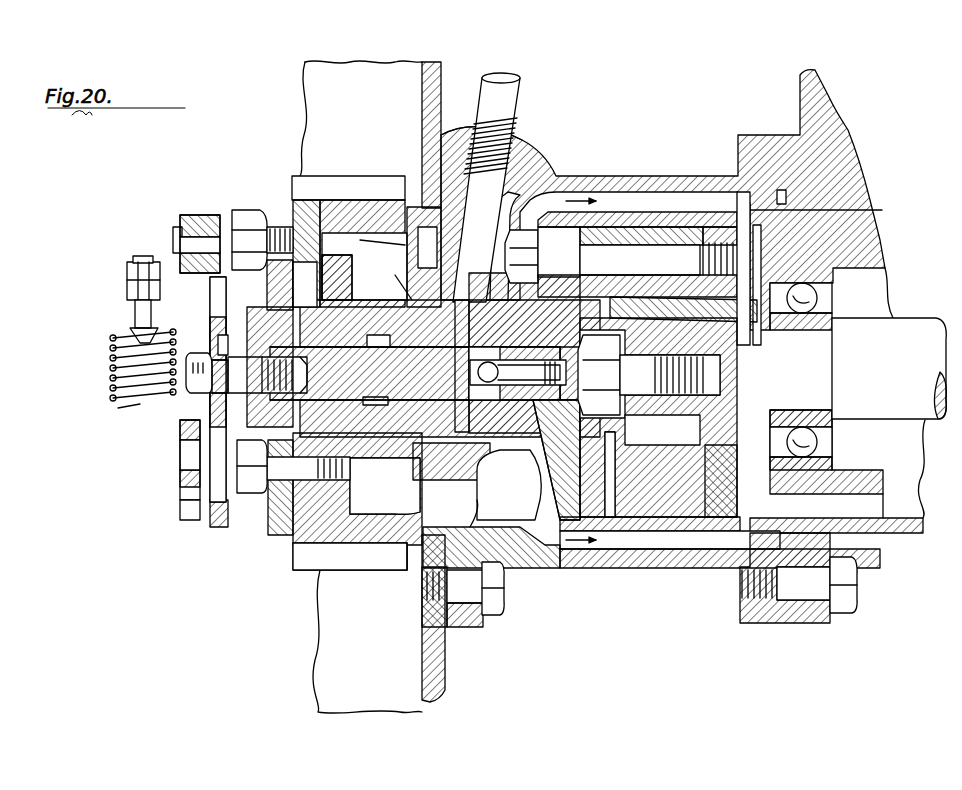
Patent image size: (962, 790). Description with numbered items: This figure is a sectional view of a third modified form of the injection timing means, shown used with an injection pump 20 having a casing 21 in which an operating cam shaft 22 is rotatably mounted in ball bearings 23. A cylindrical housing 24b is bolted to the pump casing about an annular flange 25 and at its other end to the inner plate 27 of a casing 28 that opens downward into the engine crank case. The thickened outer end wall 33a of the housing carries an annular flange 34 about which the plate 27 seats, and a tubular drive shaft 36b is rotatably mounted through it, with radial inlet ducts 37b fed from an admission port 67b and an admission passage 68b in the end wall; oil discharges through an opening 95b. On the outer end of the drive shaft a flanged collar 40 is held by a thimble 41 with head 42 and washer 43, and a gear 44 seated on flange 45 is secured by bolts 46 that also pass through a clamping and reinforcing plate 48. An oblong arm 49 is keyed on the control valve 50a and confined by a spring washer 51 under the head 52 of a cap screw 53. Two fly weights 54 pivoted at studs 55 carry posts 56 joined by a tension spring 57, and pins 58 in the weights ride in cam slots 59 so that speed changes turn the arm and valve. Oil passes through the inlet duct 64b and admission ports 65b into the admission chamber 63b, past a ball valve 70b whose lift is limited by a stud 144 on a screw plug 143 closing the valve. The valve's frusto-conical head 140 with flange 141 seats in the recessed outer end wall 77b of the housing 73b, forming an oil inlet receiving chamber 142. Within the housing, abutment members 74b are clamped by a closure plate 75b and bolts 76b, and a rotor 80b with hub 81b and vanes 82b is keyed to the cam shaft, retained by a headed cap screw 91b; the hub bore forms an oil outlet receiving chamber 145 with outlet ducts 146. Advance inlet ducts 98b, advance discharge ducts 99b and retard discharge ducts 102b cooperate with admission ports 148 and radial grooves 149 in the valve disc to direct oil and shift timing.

The injection pump 20 is at (797, 82).
The pump casing 21 is at (578, 640).
The operating cam shaft 22 is at (918, 333).
The ball bearings 23 is at (820, 445).
The housing 24b is at (668, 174).
The annular flange 25 is at (765, 210).
The inner plate 27 is at (434, 62).
The casing 28 is at (310, 66).
The outer end wall 33a is at (452, 145).
The annular flange 34 is at (415, 545).
The tubular drive shaft 36b is at (396, 460).
The radial inlet ducts 37b is at (407, 274).
The flanged collar 40 is at (348, 244).
The thimble 41 is at (295, 374).
The head 42 is at (268, 318).
The washer 43 is at (276, 296).
The gear 44 is at (308, 184).
The flange 45 is at (300, 206).
The bolts 46 is at (250, 495).
The annular clamping and reinforcing plate 48 is at (282, 535).
The oblong arm 49 is at (222, 525).
The control valve 50a is at (436, 387).
The spring washer 51 is at (220, 352).
The head 52 is at (200, 372).
The cap screw 53 is at (224, 380).
The fly weights 54 is at (180, 270).
The pivot studs 55 is at (196, 235).
The posts 56 is at (128, 296).
The tension spring 57 is at (110, 367).
The pins 58 is at (190, 443).
The cam slots 59 is at (218, 488).
The oil admission chamber 63b is at (451, 461).
The axial inlet duct 64b is at (450, 323).
The admission ports 65b is at (412, 300).
The admission port 67b is at (408, 262).
The admission passage 68b is at (505, 172).
The ball valve 70b is at (408, 412).
The housing 73b is at (675, 214).
The abutment members 74b is at (624, 232).
The closure plate 75b is at (722, 570).
The bolts 76b is at (590, 245).
The outer end wall 77b is at (553, 550).
The rotor 80b is at (672, 568).
The hub 81b is at (775, 330).
The vanes 82b is at (636, 549).
The headed cap screw 91b is at (637, 285).
The opening 95b is at (350, 556).
The advance inlet ducts 98b is at (693, 249).
The advance discharge duct 99b is at (658, 417).
The retard discharge duct 102b is at (614, 463).
The frusto-conical head 140 is at (532, 470).
The circumferential flange 141 is at (537, 490).
The oil inlet receiving chamber 142 is at (508, 345).
The screw plug 143 is at (600, 392).
The stud 144 is at (600, 350).
The oil outlet receiving chamber 145 is at (659, 432).
The outlet ducts 146 is at (740, 312).
The oil admission ports 148 is at (656, 259).
The radial grooves 149 is at (540, 510).